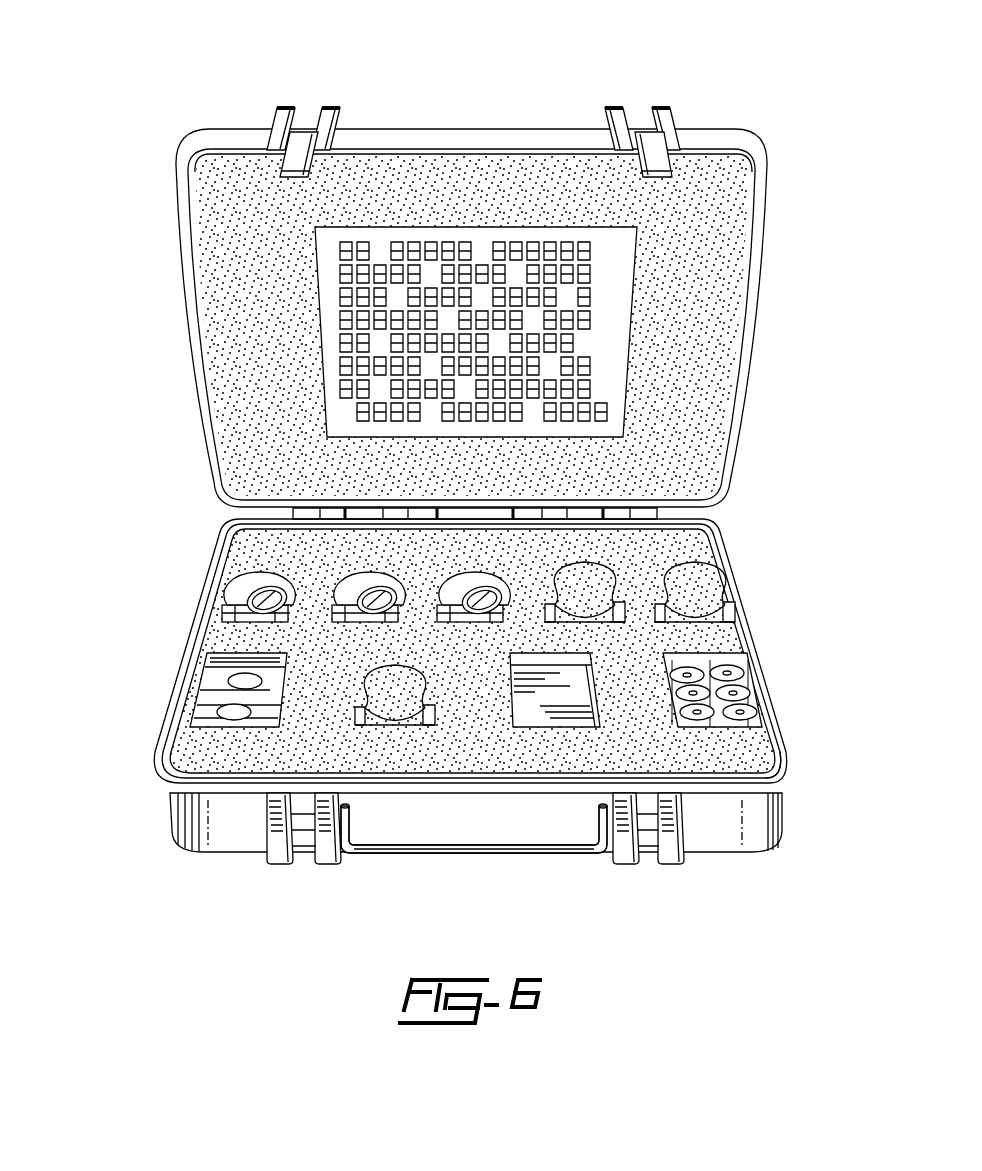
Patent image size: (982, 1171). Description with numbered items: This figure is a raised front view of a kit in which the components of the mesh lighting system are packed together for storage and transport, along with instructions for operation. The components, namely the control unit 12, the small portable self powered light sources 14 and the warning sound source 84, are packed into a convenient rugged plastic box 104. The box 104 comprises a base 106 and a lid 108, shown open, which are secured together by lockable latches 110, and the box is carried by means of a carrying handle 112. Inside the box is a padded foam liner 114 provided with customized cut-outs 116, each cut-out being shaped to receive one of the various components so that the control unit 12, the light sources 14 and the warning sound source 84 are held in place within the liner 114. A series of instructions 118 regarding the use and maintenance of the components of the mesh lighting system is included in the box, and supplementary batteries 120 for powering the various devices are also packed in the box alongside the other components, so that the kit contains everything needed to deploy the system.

The control unit 12 is at (210, 700).
The light sources 14 is at (258, 593).
The warning sound source 84 is at (550, 695).
The rugged plastic box 104 is at (168, 806).
The base 106 is at (216, 549).
The lid 108 is at (196, 351).
The lockable latches 110 is at (647, 157).
The carrying handle 112 is at (470, 862).
The padded foam liner 114 is at (780, 716).
The customized cut-outs 116 is at (695, 588).
The instructions 118 is at (620, 282).
The supplementary batteries 120 is at (745, 672).